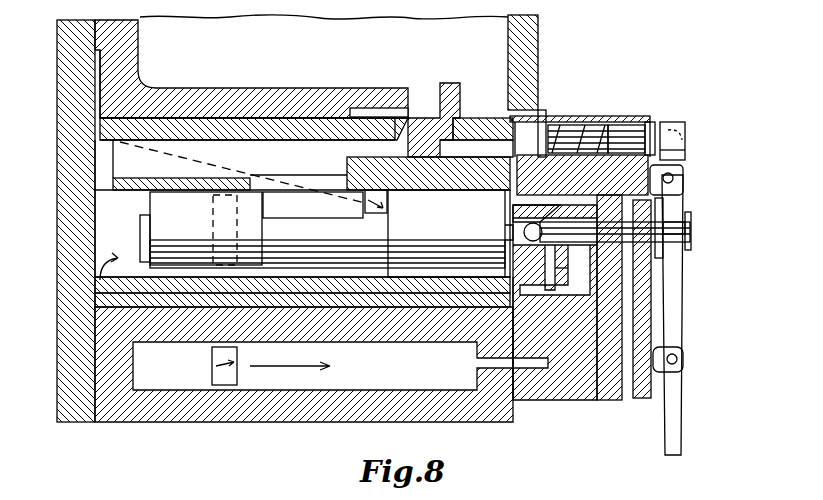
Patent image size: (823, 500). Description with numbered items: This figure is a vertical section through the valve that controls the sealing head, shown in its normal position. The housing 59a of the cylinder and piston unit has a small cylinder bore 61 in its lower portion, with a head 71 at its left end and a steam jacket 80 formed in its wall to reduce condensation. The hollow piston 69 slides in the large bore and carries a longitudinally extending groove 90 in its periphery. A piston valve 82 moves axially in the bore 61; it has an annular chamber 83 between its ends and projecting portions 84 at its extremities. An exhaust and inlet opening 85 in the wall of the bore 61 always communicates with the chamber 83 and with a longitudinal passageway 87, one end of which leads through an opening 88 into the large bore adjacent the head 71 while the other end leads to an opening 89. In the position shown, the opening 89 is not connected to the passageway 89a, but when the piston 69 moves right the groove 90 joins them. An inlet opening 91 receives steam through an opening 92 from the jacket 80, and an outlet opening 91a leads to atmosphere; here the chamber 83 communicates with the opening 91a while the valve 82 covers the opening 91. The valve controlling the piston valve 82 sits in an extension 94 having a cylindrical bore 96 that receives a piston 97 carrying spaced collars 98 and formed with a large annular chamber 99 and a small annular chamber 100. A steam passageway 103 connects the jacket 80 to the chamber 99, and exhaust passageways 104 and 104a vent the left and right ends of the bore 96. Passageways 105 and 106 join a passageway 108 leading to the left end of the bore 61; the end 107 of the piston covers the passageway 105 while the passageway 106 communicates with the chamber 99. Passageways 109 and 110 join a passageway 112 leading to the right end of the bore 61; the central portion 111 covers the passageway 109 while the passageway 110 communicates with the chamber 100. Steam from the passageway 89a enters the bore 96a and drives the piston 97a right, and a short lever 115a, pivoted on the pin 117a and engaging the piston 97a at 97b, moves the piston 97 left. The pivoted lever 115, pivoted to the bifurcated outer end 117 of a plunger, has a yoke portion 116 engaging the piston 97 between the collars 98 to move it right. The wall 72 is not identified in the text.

The housing 59a is at (540, 19).
The small cylinder bore 61 is at (287, 173).
The hollow piston 69 is at (178, 102).
The head 71 is at (62, 73).
The partition wall 72 is at (540, 42).
The steam jacket 80 is at (148, 372).
The piston valve 82 is at (150, 210).
The annular chamber 83 is at (304, 205).
The projecting portions 84 is at (142, 232).
The exhaust and inlet opening 85 is at (333, 182).
The longitudinal passageway 87 is at (240, 138).
The opening 88 is at (100, 130).
The opening 89 is at (408, 128).
The passageway 89a is at (480, 136).
The longitudinally extending groove 90 is at (370, 112).
The inlet opening 91 is at (327, 256).
The outlet opening 91a is at (365, 263).
The opening 92 is at (212, 373).
The extension 94 is at (685, 165).
The cylindrical bore 96 is at (660, 242).
The bore 96a is at (545, 150).
The piston 97 is at (690, 212).
The piston 97a is at (560, 165).
The engagement point 97b is at (690, 128).
The collars 98 is at (692, 233).
The large annular chamber 99 is at (528, 226).
The small annular chamber 100 is at (665, 215).
The steam passageway 103 is at (568, 388).
The exhaust passageway 104 is at (533, 392).
The exhaust passageway 104a is at (625, 320).
The passageway 105 is at (527, 236).
The passageway 106 is at (535, 228).
The end of piston 107 is at (578, 160).
The passageway 108 is at (455, 318).
The passageway 109 is at (612, 160).
The passageway 110 is at (648, 165).
The central portion 111 is at (560, 255).
The passageway 112 is at (590, 165).
The pivoted lever 115 is at (672, 395).
The short lever 115a is at (690, 148).
The yoke portion 116 is at (690, 245).
The bifurcated outer end 117 is at (680, 360).
The pin 117a is at (690, 175).